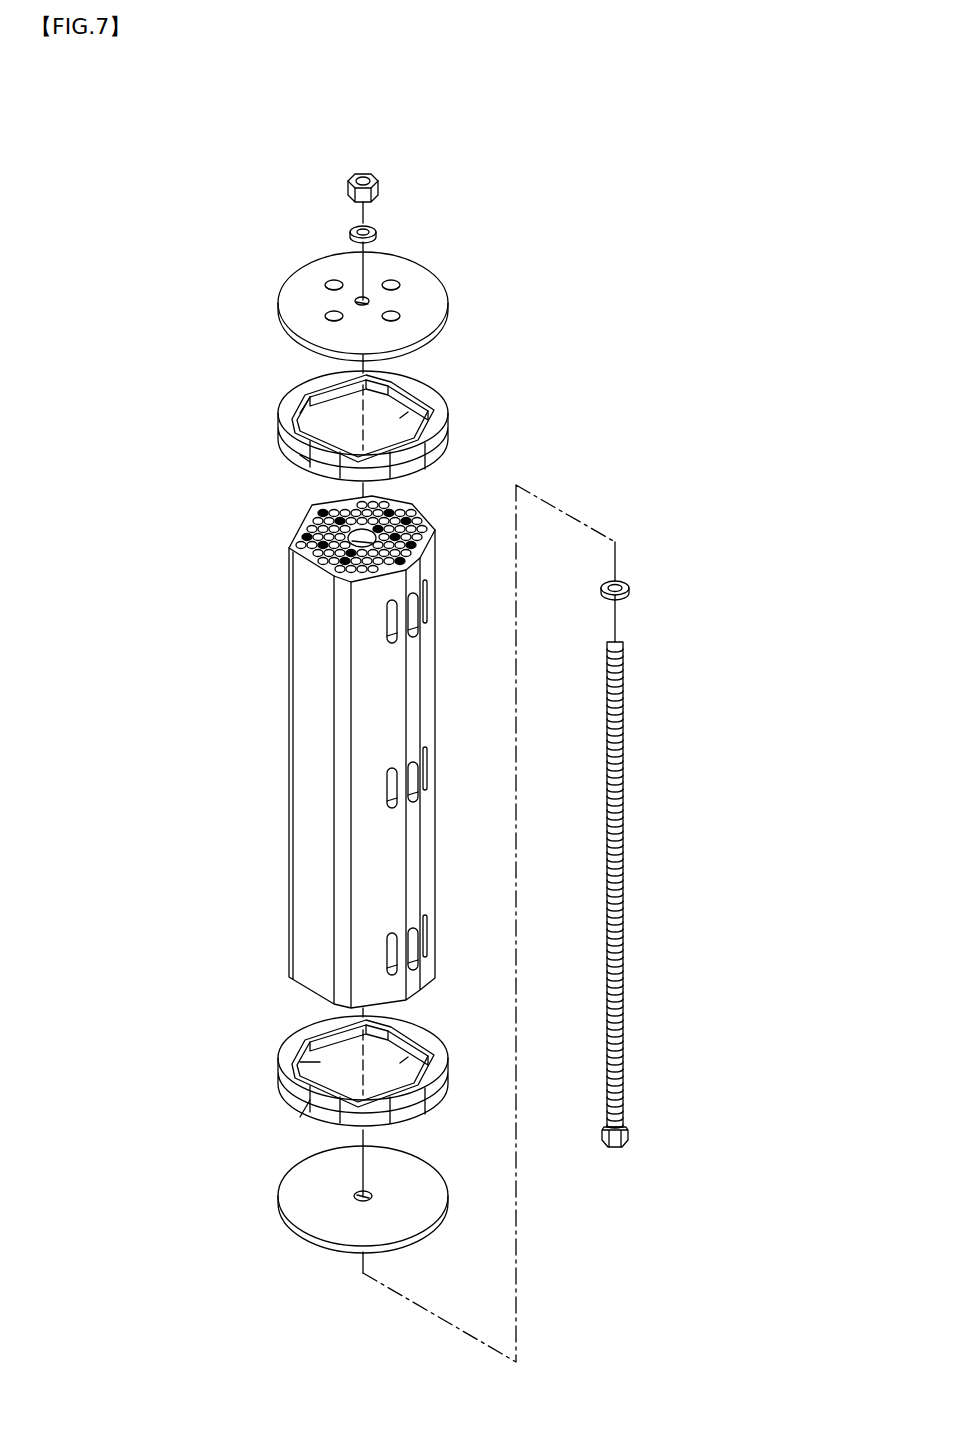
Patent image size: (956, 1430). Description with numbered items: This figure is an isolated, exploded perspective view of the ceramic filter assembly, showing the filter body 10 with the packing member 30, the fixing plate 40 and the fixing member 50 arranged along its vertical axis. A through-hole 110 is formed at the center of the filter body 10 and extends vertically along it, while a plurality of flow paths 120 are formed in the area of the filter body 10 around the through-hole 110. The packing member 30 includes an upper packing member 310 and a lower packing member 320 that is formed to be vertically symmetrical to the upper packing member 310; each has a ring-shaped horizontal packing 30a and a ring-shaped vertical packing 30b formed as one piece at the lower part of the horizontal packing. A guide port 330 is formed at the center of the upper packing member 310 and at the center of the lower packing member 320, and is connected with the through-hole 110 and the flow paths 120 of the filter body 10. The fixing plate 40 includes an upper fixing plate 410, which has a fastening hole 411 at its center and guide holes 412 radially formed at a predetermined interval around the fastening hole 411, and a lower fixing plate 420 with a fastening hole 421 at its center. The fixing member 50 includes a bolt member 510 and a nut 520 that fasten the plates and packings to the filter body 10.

The filter body 10 is at (377, 743).
The through-hole 110 is at (382, 524).
The flow paths 120 is at (424, 526).
The packing member 30 is at (346, 749).
The ring-shaped horizontal packing 30a is at (290, 413).
The ring-shaped vertical packing 30b is at (300, 463).
The upper packing member 310 is at (210, 410).
The lower packing member 320 is at (210, 1058).
The guide port 330 is at (388, 421).
The fixing plate 40 is at (409, 292).
The upper fixing plate 410 is at (428, 325).
The fastening hole 411 is at (366, 298).
The guide hole 412 is at (458, 302).
The lower fixing plate 420 is at (382, 1196).
The fastening hole 421 is at (376, 1192).
The fixing member 50 is at (659, 864).
The bolt member 510 is at (636, 908).
The nut 520 is at (378, 190).